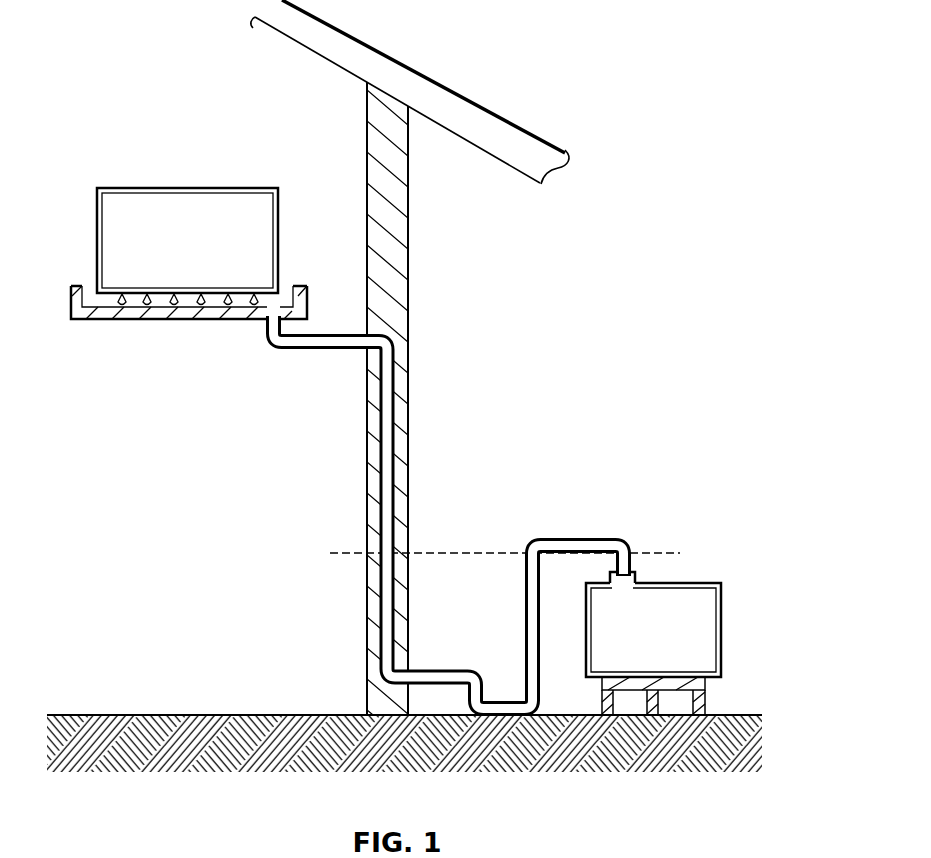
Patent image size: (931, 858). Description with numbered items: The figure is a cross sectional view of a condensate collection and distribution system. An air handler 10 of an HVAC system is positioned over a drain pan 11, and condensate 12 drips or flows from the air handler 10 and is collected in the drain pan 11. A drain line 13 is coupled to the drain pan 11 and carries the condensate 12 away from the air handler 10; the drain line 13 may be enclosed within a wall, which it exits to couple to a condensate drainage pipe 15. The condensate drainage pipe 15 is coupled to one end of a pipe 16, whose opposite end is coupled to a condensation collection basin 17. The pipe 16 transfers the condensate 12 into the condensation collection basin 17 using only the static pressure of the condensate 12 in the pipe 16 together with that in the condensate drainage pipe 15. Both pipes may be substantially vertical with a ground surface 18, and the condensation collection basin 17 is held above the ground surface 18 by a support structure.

The air handler 10 is at (187, 187).
The drain pan 11 is at (112, 320).
The condensate 12 is at (148, 308).
The drain line 13 is at (378, 402).
The condensate drainage pipe 15 is at (450, 668).
The pipe 16 is at (522, 585).
The condensation collection basin 17 is at (722, 627).
The ground surface 18 is at (758, 740).